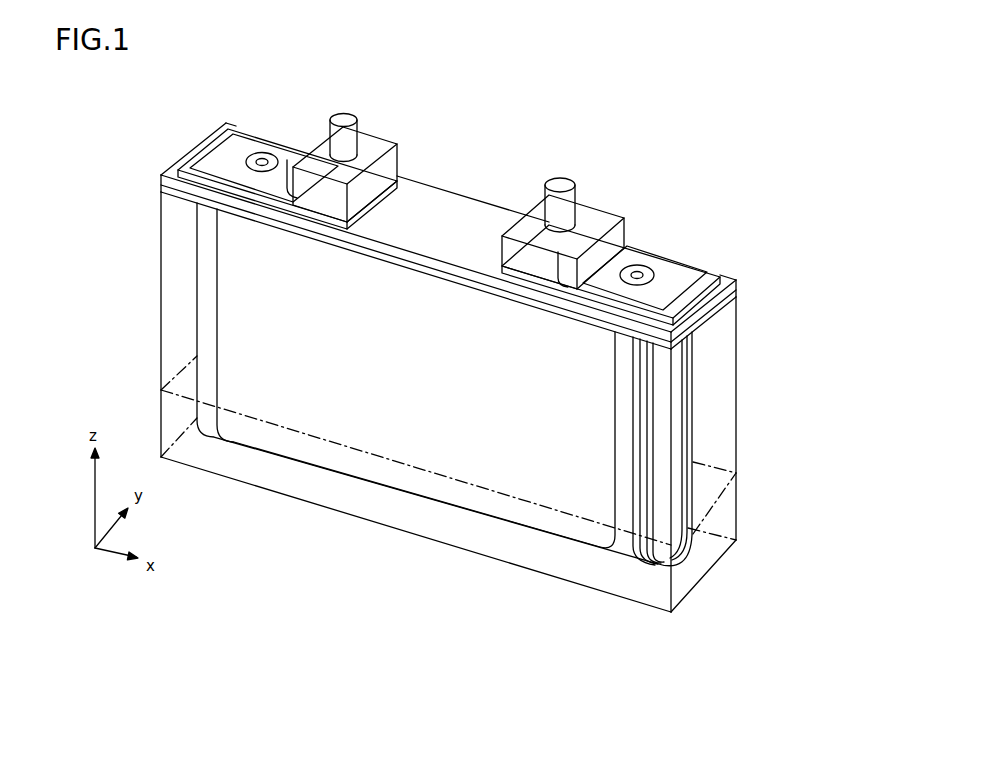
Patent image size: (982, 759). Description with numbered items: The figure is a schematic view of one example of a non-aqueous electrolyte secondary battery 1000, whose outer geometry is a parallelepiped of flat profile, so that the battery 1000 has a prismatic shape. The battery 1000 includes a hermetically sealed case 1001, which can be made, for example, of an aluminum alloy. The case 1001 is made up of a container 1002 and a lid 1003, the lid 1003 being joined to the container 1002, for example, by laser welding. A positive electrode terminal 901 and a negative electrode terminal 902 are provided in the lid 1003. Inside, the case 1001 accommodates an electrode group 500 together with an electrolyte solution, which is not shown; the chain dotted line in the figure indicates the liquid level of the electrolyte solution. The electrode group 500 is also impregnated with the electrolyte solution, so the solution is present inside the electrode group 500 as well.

The battery 1000 is at (505, 103).
The case 1001 is at (810, 240).
The container 1002 is at (740, 330).
The lid 1003 is at (738, 280).
The electrode group 500 is at (400, 394).
The positive electrode terminal 901 is at (561, 180).
The negative electrode terminal 902 is at (344, 114).